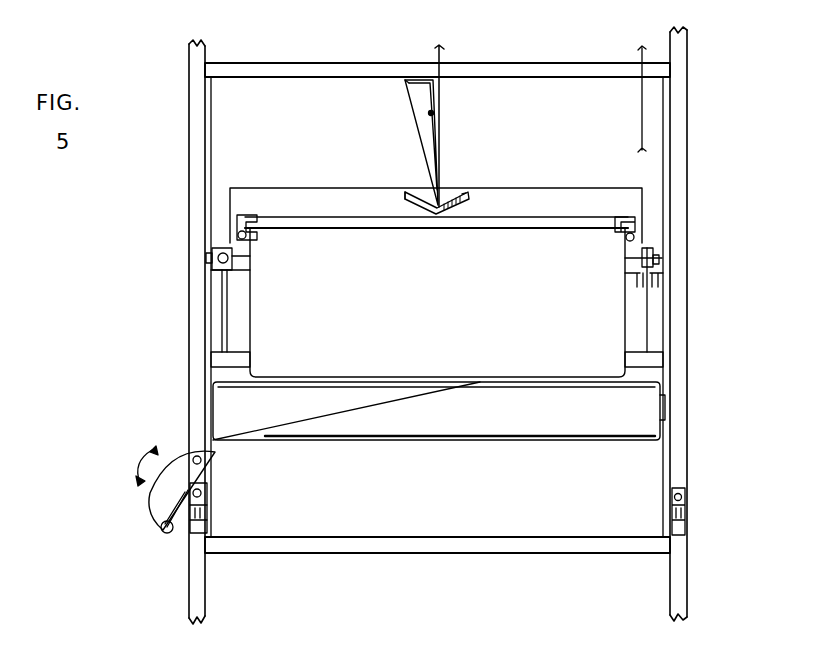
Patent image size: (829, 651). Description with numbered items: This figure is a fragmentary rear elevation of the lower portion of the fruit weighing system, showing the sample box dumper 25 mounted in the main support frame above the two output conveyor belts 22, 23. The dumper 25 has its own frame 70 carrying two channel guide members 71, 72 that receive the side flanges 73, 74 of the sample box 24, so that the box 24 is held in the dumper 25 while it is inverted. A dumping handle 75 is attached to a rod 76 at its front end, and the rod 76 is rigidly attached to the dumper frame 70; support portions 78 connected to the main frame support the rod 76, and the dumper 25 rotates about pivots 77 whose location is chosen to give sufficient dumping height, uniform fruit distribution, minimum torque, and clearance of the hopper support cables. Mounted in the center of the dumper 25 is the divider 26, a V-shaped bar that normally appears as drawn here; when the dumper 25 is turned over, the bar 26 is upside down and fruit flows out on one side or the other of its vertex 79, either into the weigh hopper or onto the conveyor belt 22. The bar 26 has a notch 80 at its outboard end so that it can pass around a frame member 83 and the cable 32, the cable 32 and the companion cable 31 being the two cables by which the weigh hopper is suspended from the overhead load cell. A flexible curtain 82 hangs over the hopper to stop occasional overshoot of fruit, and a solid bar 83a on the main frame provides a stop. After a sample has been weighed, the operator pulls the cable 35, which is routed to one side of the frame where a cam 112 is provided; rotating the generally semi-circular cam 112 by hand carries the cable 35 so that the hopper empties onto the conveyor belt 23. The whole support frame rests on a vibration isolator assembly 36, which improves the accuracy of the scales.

The output conveyor belt 22 is at (304, 419).
The output conveyor belt 23 is at (584, 419).
The sample box 24 is at (461, 276).
The sample box dumper 25 is at (296, 184).
The divider 26 is at (468, 196).
The cable 31 is at (638, 50).
The cable 32 is at (444, 50).
The cable 35 is at (452, 388).
The vibration isolator assembly 36 is at (688, 512).
The frame of the dumper 70 is at (646, 214).
The channel guide member 71 is at (625, 216).
The channel guide member 72 is at (237, 222).
The side flange 73 is at (636, 224).
The side flange 74 is at (252, 230).
The dumping handle 75 is at (218, 260).
The rod 76 is at (225, 278).
The pivot 77 is at (206, 258).
The support portion 78 is at (650, 316).
The vertex 79 is at (413, 204).
The notch 80 is at (446, 202).
The flexible curtain 82 is at (334, 119).
The frame member 83 is at (433, 114).
The solid bar 83a is at (410, 76).
The cam 112 is at (162, 490).